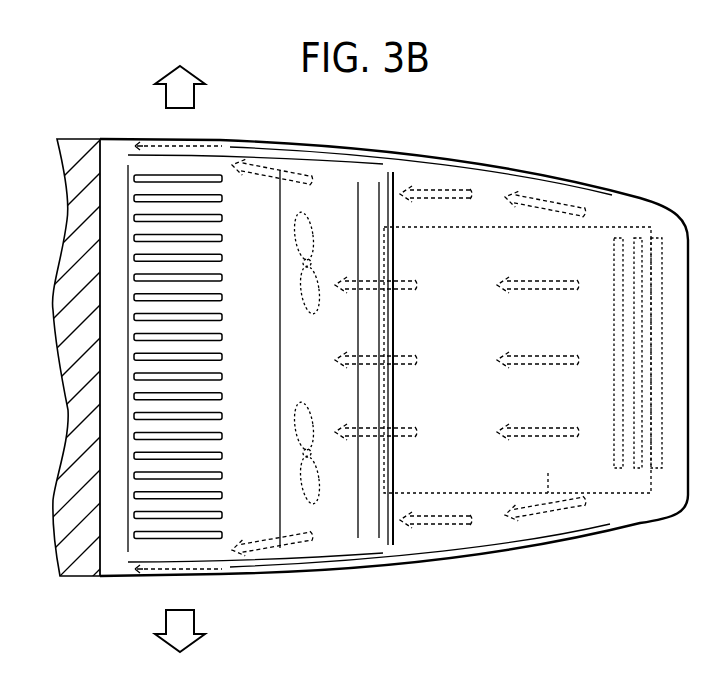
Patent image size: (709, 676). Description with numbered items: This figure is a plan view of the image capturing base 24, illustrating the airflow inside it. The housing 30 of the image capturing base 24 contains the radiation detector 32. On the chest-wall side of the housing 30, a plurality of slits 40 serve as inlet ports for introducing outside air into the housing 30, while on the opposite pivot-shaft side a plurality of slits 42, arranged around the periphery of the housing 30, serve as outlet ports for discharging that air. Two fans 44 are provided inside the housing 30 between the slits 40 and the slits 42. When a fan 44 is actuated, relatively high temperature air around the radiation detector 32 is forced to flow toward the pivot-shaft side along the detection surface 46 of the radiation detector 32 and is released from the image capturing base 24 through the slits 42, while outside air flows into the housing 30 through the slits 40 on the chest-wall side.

The image capturing base 24 is at (449, 557).
The housing 30 is at (300, 575).
The radiation detector 32 is at (553, 218).
The slits 40 is at (649, 204).
The slits 42 is at (143, 145).
The fan 44 is at (290, 240).
The detection surface 46 is at (548, 493).